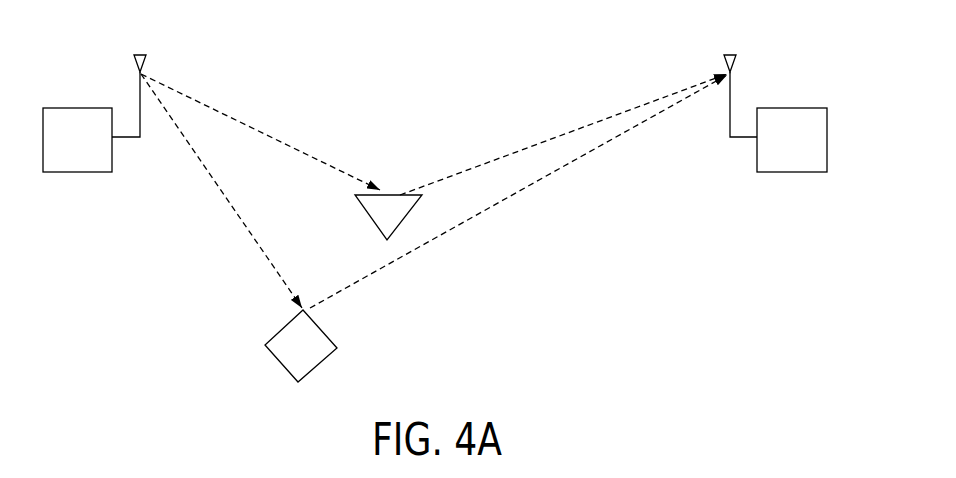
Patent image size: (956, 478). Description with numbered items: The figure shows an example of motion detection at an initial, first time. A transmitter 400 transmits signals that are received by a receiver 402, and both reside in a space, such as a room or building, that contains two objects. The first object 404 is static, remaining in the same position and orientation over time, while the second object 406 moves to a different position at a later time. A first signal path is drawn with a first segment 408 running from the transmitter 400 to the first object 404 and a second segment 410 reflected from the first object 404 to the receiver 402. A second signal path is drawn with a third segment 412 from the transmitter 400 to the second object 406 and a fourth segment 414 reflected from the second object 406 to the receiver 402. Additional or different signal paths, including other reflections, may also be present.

The transmitter 400 is at (75, 108).
The receiver 402 is at (790, 108).
The first object 404 is at (372, 220).
The second object 406 is at (282, 367).
The first segment 408 is at (300, 148).
The second segment 410 is at (535, 142).
The third segment 412 is at (222, 193).
The fourth segment 414 is at (502, 203).